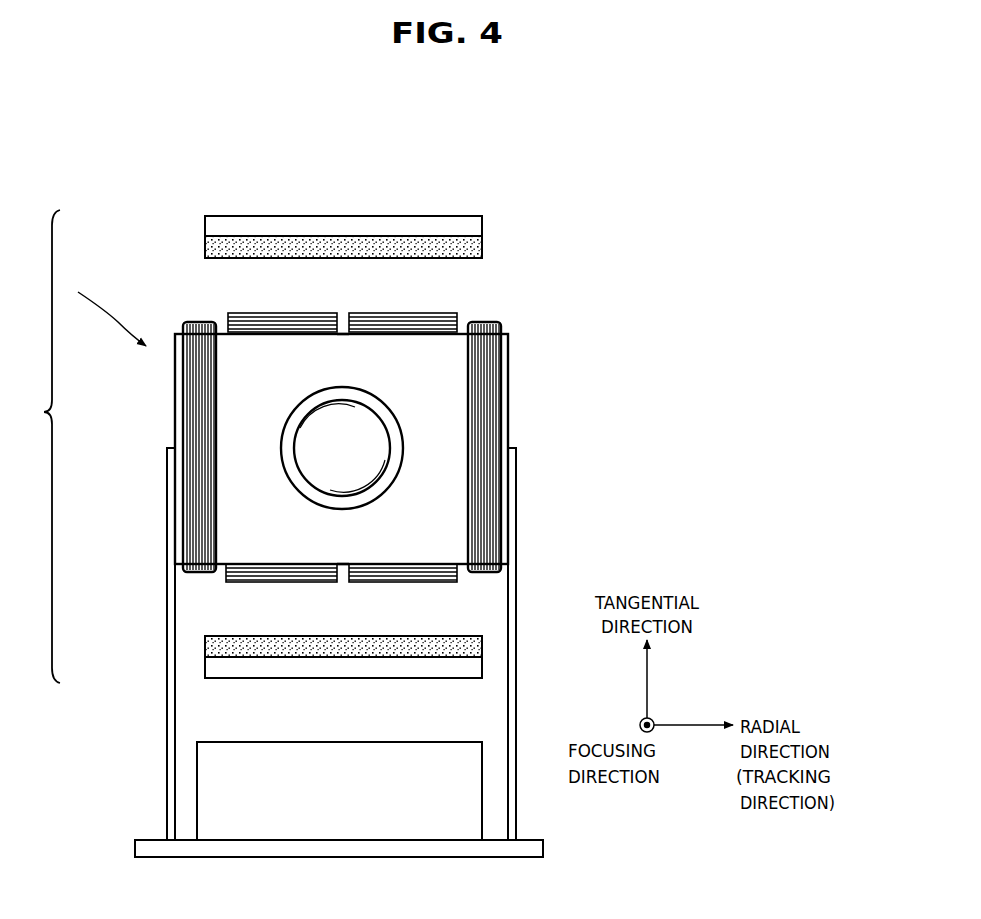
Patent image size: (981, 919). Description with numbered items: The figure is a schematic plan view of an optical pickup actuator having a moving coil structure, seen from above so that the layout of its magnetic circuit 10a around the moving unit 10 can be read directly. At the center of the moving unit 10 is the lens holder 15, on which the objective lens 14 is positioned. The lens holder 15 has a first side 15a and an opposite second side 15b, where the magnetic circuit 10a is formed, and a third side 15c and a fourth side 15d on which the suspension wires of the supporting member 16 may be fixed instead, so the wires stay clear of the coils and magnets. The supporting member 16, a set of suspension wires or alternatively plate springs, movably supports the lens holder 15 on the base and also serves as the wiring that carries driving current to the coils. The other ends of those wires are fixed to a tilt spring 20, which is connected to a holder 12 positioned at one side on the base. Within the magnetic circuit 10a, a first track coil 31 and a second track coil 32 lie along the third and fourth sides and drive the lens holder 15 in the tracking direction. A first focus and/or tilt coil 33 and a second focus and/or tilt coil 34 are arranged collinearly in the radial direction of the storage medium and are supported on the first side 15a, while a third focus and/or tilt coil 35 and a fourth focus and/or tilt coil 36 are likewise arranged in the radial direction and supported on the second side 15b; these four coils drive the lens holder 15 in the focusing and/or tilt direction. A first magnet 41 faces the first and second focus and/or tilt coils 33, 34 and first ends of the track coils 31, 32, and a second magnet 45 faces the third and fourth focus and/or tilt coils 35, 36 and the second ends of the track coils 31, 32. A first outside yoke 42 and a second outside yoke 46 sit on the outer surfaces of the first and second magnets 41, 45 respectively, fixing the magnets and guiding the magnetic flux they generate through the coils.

The moving unit 10 is at (103, 312).
The magnetic circuit 10a is at (34, 446).
The holder 12 is at (382, 751).
The objective lens 14 is at (381, 421).
The lens holder 15 is at (455, 372).
The first side of the lens holder 15a is at (343, 565).
The second side of the lens holder 15b is at (343, 333).
The third side of the lens holder 15c is at (152, 447).
The fourth side of the lens holder 15d is at (533, 447).
The supporting member 16 is at (167, 723).
The tilt spring 20 is at (327, 858).
The first track coil 31 is at (196, 492).
The second track coil 32 is at (486, 492).
The first focus and/or tilt coil 33 is at (280, 582).
The second focus and/or tilt coil 34 is at (407, 582).
The third focus and/or tilt coil 35 is at (277, 313).
The fourth focus and/or tilt coil 36 is at (407, 313).
The first magnet 41 is at (205, 646).
The first outside yoke 42 is at (205, 667).
The second magnet 45 is at (205, 247).
The second outside yoke 46 is at (205, 224).